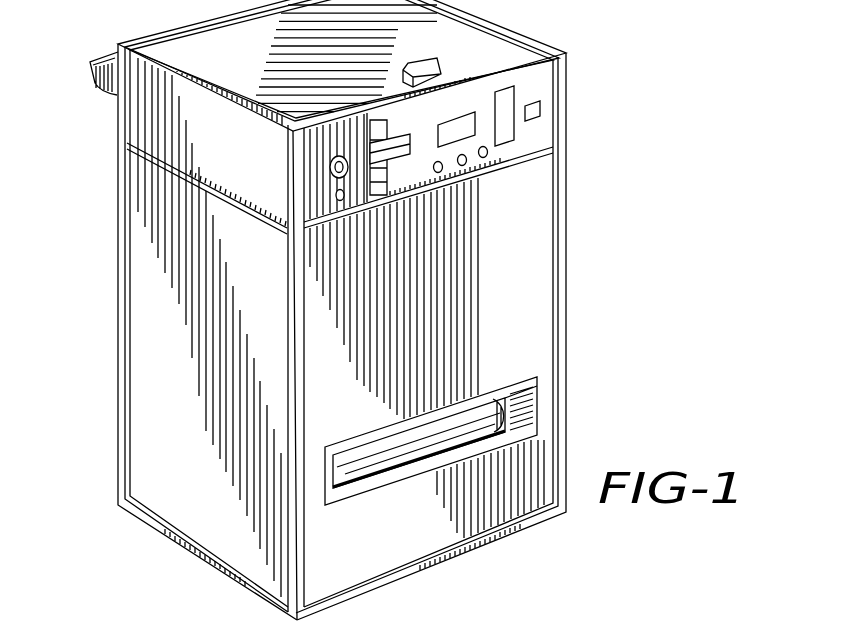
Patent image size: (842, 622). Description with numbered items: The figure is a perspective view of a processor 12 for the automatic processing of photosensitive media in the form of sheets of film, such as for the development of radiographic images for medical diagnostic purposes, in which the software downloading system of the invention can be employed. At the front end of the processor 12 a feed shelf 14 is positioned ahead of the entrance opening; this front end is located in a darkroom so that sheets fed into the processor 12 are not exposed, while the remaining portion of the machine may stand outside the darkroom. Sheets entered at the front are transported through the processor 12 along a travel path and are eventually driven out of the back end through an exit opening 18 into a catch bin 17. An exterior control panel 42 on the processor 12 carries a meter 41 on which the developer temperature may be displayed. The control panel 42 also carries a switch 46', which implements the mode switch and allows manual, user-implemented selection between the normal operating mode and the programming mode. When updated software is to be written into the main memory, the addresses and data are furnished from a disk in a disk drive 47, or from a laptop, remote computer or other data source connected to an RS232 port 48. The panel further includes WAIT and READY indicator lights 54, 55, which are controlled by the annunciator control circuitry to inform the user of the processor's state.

The processor 12 is at (596, 56).
The feed shelf 14 is at (105, 88).
The catch bin 17 is at (496, 400).
The exit opening 18 is at (395, 462).
The meter 41 is at (462, 125).
The control panel 42 is at (546, 132).
The switch 46' is at (352, 208).
The disk drive 47 is at (398, 165).
The RS232 port 48 is at (376, 127).
The WAIT indicator light 54 is at (483, 160).
The READY indicator light 55 is at (438, 175).